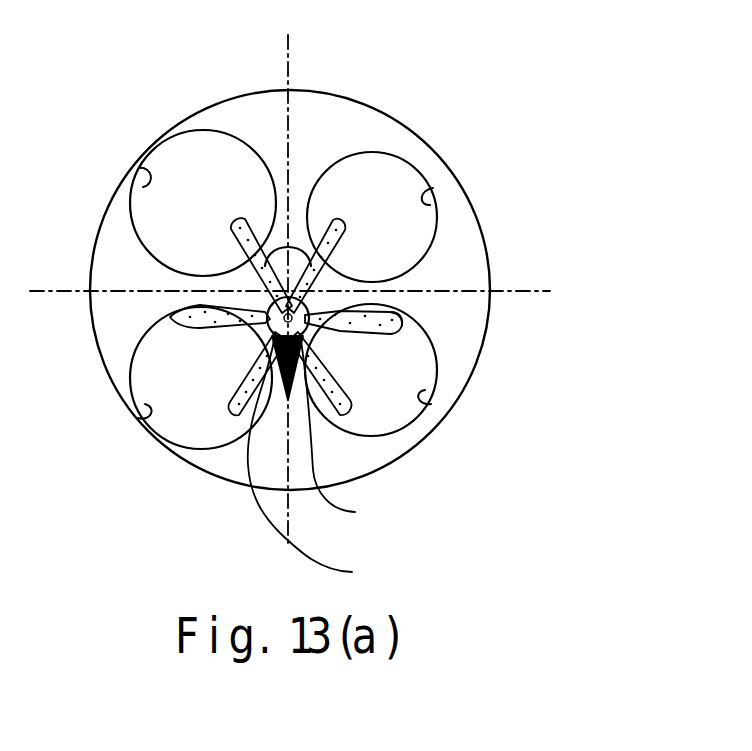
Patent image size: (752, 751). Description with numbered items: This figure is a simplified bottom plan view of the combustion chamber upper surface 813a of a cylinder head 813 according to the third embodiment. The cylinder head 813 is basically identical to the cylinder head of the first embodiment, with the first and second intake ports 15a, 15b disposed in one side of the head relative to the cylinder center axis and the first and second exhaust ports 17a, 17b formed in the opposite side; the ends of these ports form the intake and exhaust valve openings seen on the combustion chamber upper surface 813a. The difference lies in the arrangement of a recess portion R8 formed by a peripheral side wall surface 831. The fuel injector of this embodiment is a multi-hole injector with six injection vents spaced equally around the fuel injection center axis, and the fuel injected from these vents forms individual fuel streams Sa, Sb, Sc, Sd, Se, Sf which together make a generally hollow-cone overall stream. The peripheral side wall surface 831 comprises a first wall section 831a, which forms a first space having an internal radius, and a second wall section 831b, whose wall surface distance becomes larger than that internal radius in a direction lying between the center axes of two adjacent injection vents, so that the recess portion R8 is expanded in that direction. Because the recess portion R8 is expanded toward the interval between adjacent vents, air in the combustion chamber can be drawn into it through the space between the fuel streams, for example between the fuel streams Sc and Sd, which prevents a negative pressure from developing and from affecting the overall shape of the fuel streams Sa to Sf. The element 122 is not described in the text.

The cylinder head 813 is at (330, 260).
The combustion chamber upper surface 813a is at (309, 104).
The bearing portion 122 is at (272, 252).
The second exhaust port 17b is at (145, 168).
The second intake port 15b is at (428, 200).
The first exhaust port 17a is at (147, 412).
The first intake port 15a is at (424, 400).
The fuel stream Sa is at (347, 225).
The fuel stream Sb is at (424, 334).
The fuel stream Sc is at (348, 410).
The fuel stream Sd is at (234, 410).
The fuel stream Se is at (172, 316).
The fuel stream Sf is at (235, 222).
The recess portion R8 is at (303, 312).
The peripheral side wall surface 831 is at (367, 461).
The first wall section 831a is at (427, 492).
The second wall section 831b is at (354, 430).